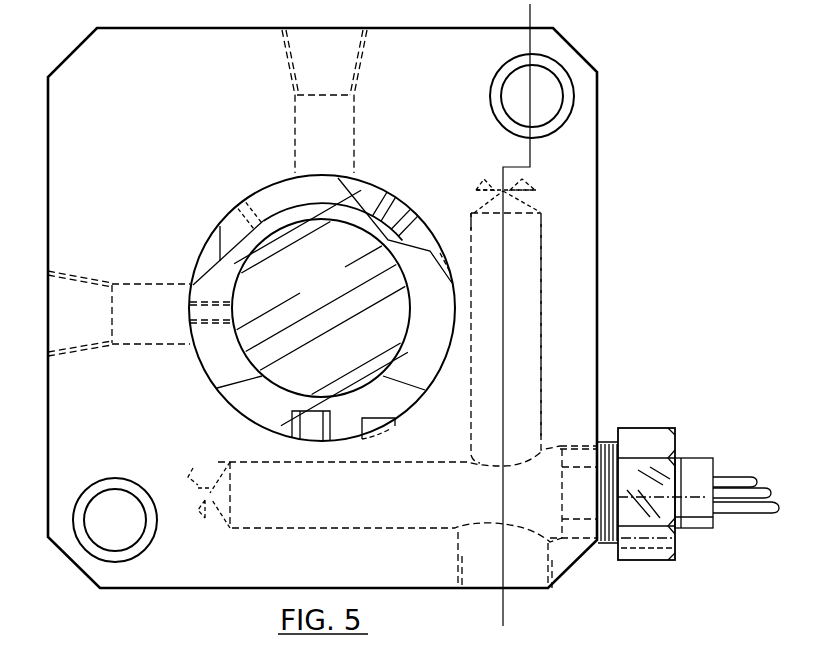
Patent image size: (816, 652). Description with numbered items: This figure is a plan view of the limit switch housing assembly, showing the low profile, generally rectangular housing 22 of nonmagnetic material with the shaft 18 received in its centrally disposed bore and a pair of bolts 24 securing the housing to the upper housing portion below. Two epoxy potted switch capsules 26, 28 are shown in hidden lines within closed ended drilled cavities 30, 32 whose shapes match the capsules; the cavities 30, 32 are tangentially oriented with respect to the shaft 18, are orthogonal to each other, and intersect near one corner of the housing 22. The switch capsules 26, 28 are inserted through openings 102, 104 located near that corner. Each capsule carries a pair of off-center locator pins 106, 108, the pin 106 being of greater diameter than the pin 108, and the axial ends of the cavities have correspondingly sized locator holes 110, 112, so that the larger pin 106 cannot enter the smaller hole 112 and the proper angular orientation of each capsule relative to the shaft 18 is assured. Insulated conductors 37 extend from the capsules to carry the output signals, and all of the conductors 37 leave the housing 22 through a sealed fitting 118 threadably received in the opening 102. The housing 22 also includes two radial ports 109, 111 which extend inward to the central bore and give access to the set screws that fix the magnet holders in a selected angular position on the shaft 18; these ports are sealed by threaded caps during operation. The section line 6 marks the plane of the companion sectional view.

The section line 6- 6 is at (545, 11).
The shaft 18 is at (340, 290).
The housing 22 is at (166, 154).
The bolts 24 is at (543, 92).
The switch capsule 26 is at (262, 528).
The switch capsule 28 is at (527, 360).
The cavity 30 is at (324, 530).
The cavity 32 is at (541, 314).
The insulated conductors 37 is at (722, 512).
The opening 102 is at (568, 447).
The opening 104 is at (545, 562).
The locator pin 106 is at (538, 192).
The locator pin 108 is at (476, 192).
The port 109 is at (134, 346).
The locator hole 110 is at (538, 209).
The port 111 is at (355, 137).
The locator hole 112 is at (475, 202).
The sealed fitting 118 is at (645, 442).